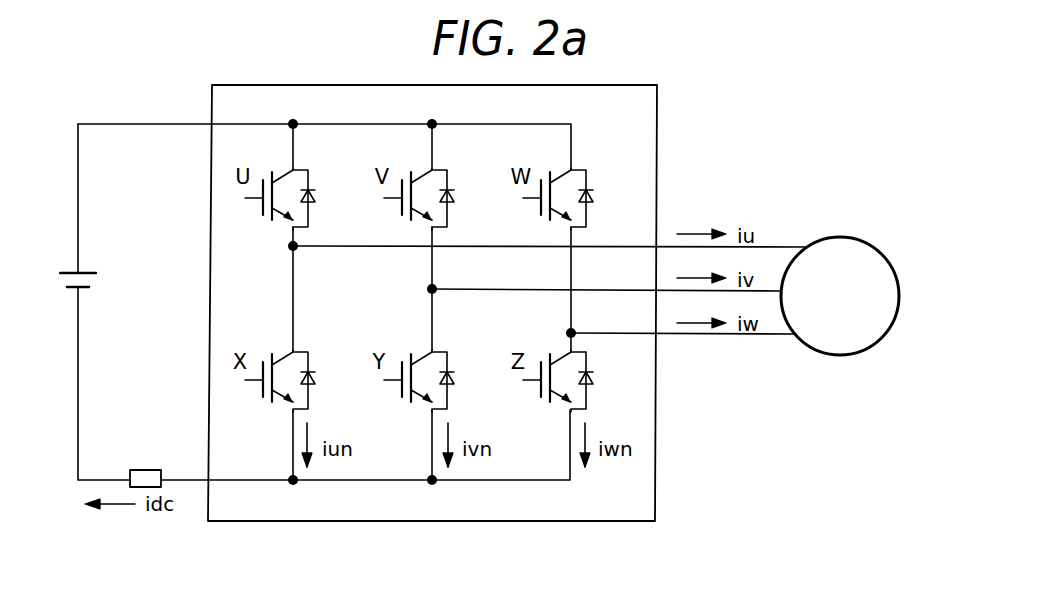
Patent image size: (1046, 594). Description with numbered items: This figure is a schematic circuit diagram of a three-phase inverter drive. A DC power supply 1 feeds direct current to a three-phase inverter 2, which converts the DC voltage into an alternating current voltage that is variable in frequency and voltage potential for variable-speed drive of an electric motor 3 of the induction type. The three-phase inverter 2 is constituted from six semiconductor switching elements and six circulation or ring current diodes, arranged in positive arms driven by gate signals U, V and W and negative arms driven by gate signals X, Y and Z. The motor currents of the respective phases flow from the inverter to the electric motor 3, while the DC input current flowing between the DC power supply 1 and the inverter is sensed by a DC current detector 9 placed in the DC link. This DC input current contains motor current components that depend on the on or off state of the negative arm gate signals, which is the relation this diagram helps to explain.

The DC power supply 1 is at (70, 272).
The three-phase inverter 2 is at (567, 510).
The electric motor 3 is at (867, 352).
The DC current detector 9 is at (145, 470).